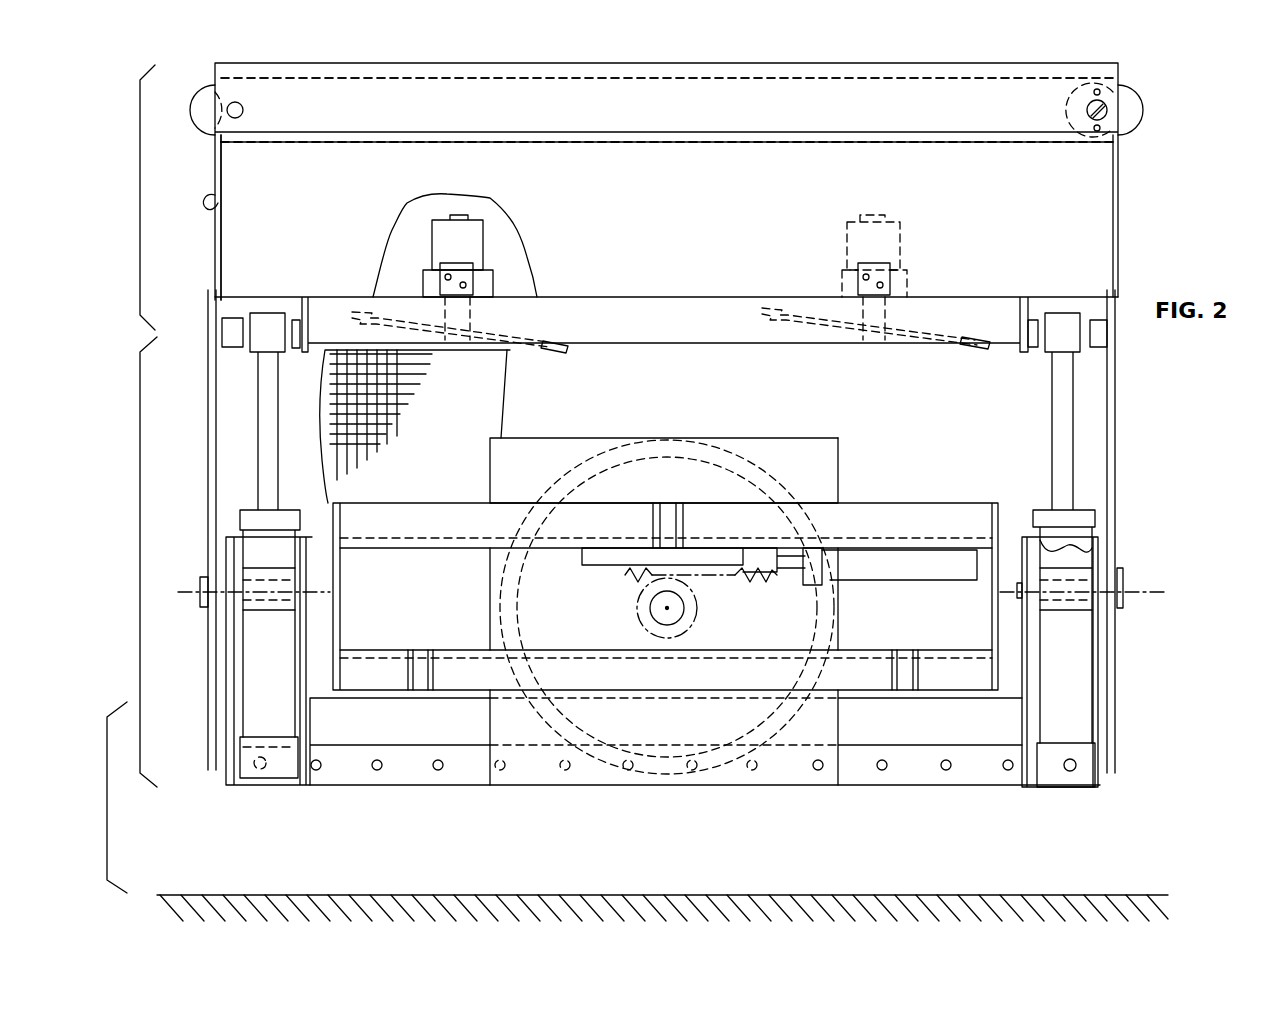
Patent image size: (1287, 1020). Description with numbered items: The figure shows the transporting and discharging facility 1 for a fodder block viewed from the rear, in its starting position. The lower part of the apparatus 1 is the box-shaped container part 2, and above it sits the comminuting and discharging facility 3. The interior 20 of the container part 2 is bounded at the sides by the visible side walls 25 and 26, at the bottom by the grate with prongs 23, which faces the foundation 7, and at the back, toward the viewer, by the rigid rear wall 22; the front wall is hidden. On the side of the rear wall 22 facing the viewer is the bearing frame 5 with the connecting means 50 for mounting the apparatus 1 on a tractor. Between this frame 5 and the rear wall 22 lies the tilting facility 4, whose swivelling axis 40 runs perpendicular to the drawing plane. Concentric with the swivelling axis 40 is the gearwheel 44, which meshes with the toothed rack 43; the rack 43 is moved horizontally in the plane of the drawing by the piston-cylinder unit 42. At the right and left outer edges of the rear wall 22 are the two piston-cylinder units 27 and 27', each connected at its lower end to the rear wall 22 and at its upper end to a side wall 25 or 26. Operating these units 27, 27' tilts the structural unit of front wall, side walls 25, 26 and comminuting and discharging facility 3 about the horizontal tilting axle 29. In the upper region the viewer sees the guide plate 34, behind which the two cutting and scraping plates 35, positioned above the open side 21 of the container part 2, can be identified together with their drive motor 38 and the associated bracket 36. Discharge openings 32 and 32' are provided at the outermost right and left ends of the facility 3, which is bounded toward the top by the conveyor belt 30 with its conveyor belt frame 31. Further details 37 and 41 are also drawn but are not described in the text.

The transporting and discharging facility 1 is at (196, 410).
The container part 2 is at (131, 562).
The comminuting and discharging facility 3 is at (130, 197).
The tilting facility 4 is at (822, 433).
The bearing frame 5 is at (398, 682).
The foundation 7 is at (678, 893).
The interior 20 is at (455, 452).
The open side 21 is at (695, 292).
The rear wall 22 is at (948, 456).
The grate with prongs 23 is at (318, 771).
The side wall 25 is at (1117, 490).
The side wall 26 is at (207, 710).
The piston-cylinder unit 27 is at (1104, 550).
The piston-cylinder unit 27' is at (318, 545).
The tilting axle 29 is at (1140, 594).
The conveyor belt 30 is at (838, 80).
The conveyor belt frame 31 is at (1108, 78).
The discharge opening 32 is at (688, 181).
The discharge opening 32' is at (246, 217).
The guide plate 34 is at (684, 212).
The cutting and scraping plate 35 is at (522, 336).
The bracket 36 is at (423, 285).
The gripper 37 is at (553, 355).
The drive motor 38 is at (432, 228).
The swivelling axis 40 is at (683, 617).
The turntable 41 is at (818, 632).
The piston-cylinder unit 42 is at (898, 570).
The toothed rack 43 is at (628, 570).
The gearwheel 44 is at (642, 620).
The connecting means 50 is at (684, 528).